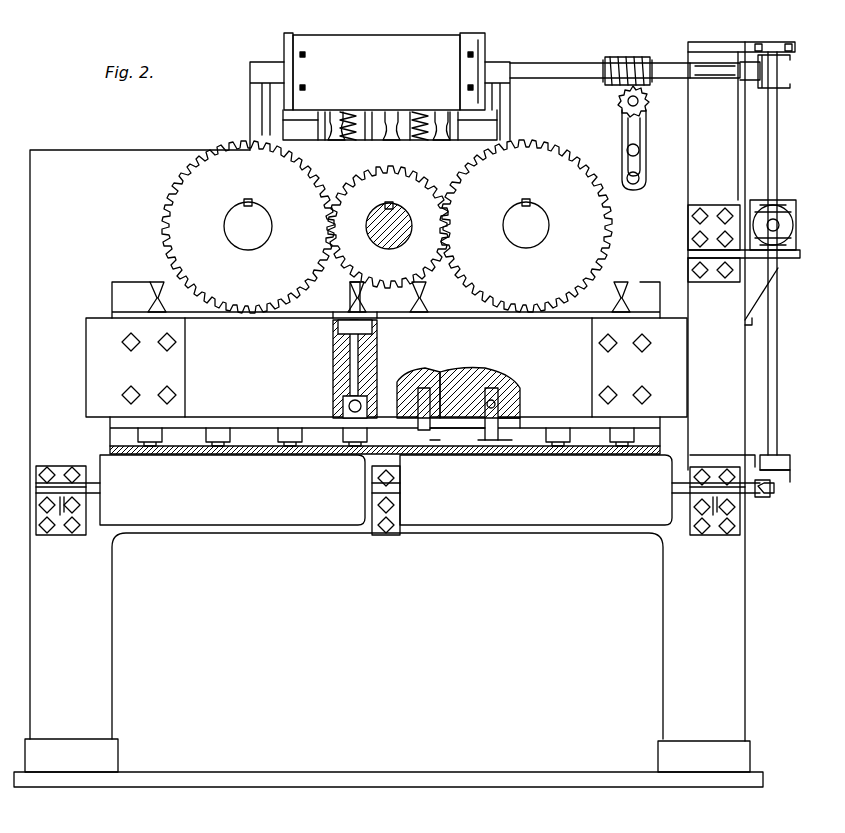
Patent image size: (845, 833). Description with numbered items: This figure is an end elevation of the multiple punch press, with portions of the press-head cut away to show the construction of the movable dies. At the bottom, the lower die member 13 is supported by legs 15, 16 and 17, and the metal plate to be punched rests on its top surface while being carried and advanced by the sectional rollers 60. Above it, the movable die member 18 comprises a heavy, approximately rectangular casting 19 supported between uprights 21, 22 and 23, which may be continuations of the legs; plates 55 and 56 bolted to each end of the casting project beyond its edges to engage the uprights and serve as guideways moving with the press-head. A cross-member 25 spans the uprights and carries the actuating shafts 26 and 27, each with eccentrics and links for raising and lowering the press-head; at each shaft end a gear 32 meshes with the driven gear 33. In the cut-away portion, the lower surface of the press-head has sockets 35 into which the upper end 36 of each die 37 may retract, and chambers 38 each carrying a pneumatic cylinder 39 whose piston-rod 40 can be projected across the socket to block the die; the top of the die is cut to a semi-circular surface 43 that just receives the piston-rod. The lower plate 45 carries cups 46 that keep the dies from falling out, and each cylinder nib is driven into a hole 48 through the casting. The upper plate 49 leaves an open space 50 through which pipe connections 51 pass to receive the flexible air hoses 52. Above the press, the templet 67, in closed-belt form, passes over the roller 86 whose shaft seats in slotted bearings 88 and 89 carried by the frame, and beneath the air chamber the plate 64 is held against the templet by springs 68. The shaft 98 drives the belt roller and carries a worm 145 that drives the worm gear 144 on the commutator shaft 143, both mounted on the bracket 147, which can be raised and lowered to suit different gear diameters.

The lower die member 13 is at (362, 462).
The leg 15 is at (668, 637).
The leg 16 is at (103, 631).
The leg 17 is at (95, 688).
The movable die member 18 is at (550, 351).
The casting 19 is at (268, 420).
The upright 21 is at (738, 435).
The upright 22 is at (40, 380).
The upright 23 is at (52, 428).
The cross-member 25 is at (140, 282).
The actuating shaft 26 is at (535, 210).
The actuating shaft 27 is at (270, 215).
The gear 32 is at (387, 246).
The driven gear 33 is at (456, 175).
The socket 35 is at (498, 378).
The upper end of die 36 is at (522, 406).
The die 37 is at (498, 441).
The chamber 38 is at (343, 398).
The pneumatic cylinder 39 is at (343, 406).
The piston-rod 40 is at (362, 404).
The semi-circular surface 43 is at (424, 386).
The plate 45 is at (585, 438).
The cup 46 is at (432, 441).
The hole 48 is at (333, 360).
The plate 49 is at (316, 320).
The open space 50 is at (372, 324).
The pipe connection 51 is at (348, 318).
The flexible air connection or hose 52 is at (414, 302).
The plate 55 is at (96, 346).
The plate 56 is at (678, 378).
The roller 60 is at (311, 530).
The plate 64 is at (318, 118).
The templet 67 is at (380, 42).
The spring 68 is at (338, 140).
The roller 86 is at (288, 42).
The slotted bearing 88 is at (517, 60).
The slotted bearing 89 is at (251, 62).
The shaft 98 is at (572, 66).
The shaft 143 is at (640, 100).
The worm gear 144 is at (620, 100).
The worm 145 is at (632, 56).
The bracket 147 is at (647, 130).